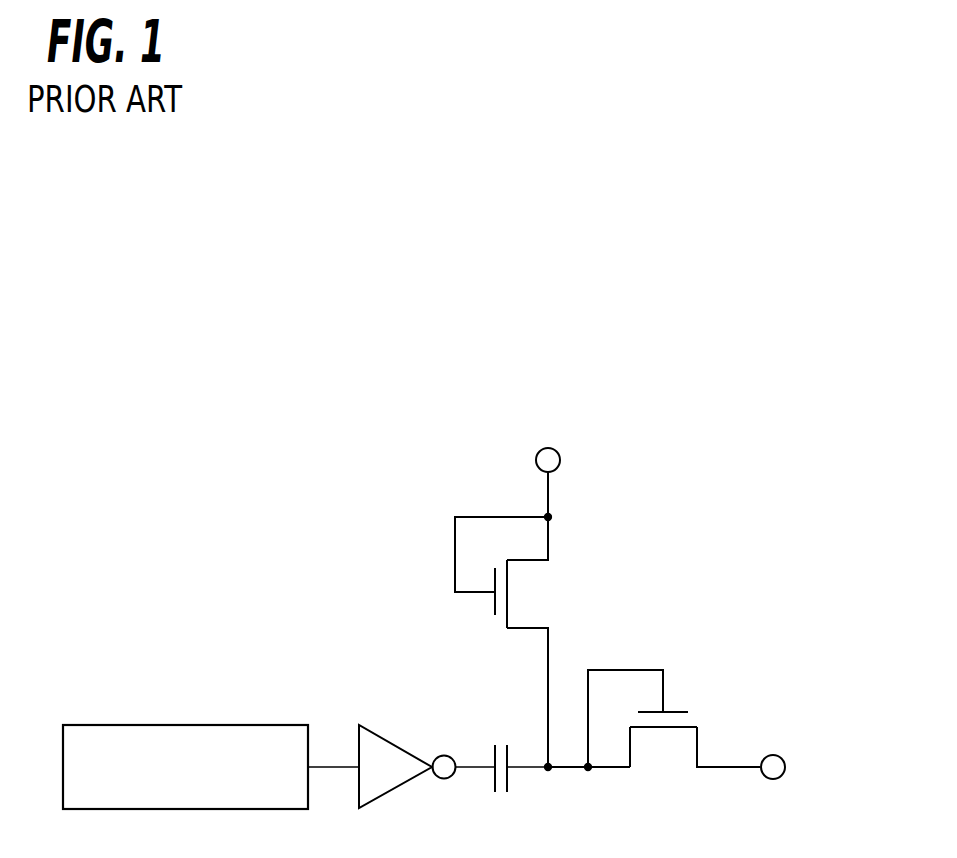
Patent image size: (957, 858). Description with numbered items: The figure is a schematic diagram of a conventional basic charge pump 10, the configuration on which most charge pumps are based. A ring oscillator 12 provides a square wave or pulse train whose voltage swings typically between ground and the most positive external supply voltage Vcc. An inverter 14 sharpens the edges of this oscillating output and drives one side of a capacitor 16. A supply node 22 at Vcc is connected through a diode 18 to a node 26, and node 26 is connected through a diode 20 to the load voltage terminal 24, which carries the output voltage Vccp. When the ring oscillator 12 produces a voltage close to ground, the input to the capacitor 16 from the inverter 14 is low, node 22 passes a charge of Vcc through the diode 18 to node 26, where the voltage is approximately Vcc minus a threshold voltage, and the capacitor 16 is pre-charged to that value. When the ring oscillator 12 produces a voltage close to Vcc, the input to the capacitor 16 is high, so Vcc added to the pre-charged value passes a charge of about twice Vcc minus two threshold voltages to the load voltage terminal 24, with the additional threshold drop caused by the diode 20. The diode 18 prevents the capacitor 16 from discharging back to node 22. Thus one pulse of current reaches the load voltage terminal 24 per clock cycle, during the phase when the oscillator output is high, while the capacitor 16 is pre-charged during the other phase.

The charge pump 10 is at (178, 658).
The ring oscillator 12 is at (200, 725).
The inverter 14 is at (405, 785).
The capacitor 16 is at (517, 752).
The diode 18 is at (527, 562).
The diode 20 is at (632, 753).
The node 22 is at (560, 456).
The load voltage terminal 24 is at (780, 756).
The node 26 is at (548, 771).